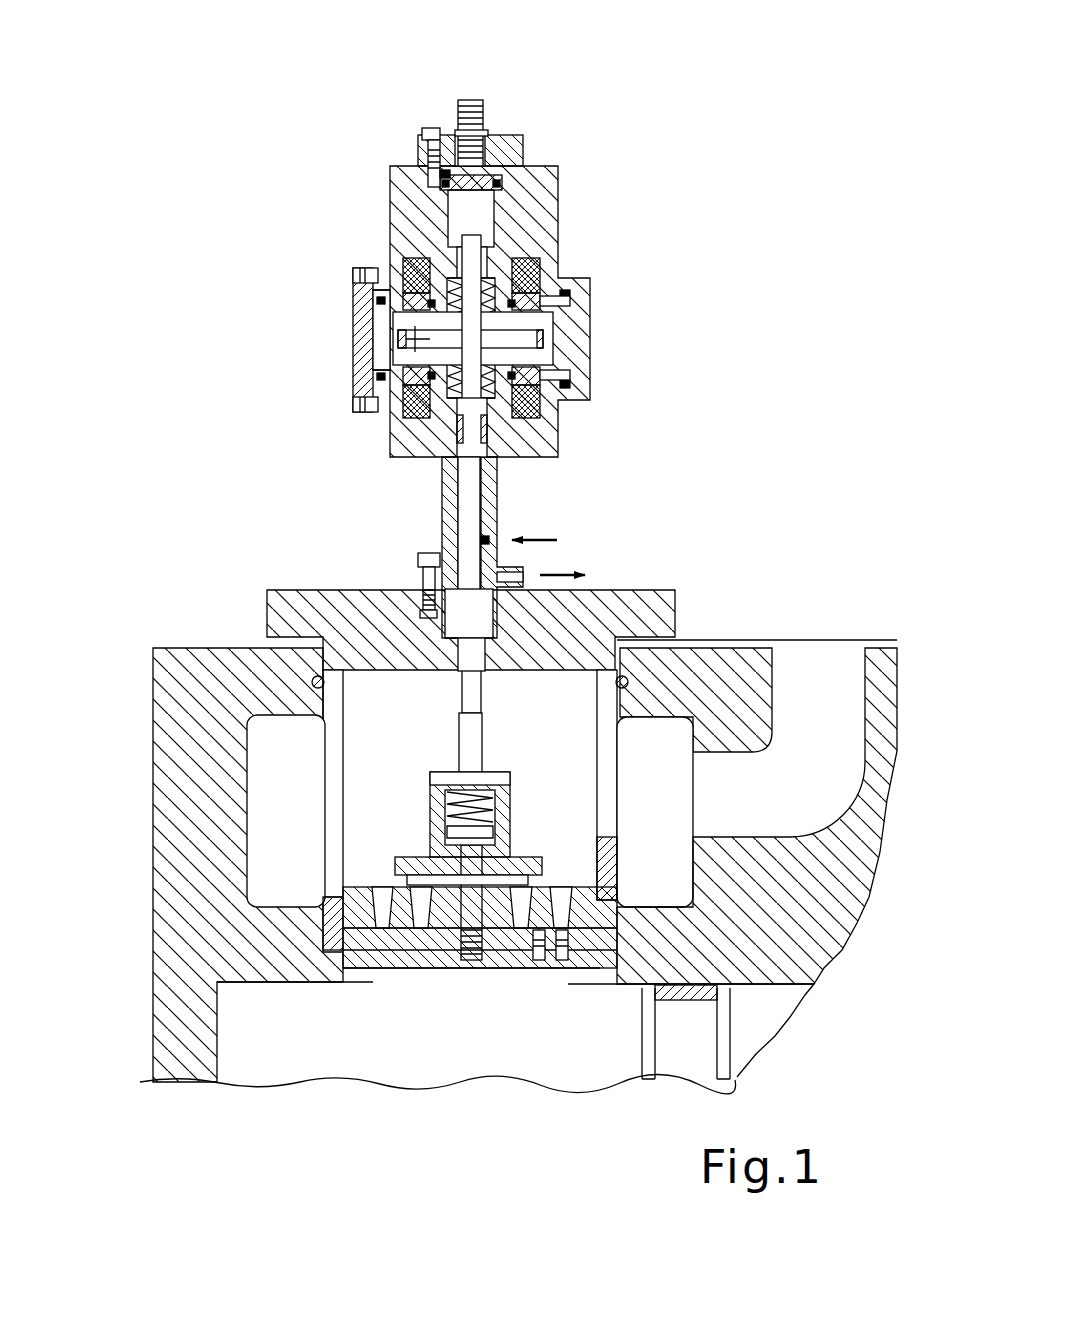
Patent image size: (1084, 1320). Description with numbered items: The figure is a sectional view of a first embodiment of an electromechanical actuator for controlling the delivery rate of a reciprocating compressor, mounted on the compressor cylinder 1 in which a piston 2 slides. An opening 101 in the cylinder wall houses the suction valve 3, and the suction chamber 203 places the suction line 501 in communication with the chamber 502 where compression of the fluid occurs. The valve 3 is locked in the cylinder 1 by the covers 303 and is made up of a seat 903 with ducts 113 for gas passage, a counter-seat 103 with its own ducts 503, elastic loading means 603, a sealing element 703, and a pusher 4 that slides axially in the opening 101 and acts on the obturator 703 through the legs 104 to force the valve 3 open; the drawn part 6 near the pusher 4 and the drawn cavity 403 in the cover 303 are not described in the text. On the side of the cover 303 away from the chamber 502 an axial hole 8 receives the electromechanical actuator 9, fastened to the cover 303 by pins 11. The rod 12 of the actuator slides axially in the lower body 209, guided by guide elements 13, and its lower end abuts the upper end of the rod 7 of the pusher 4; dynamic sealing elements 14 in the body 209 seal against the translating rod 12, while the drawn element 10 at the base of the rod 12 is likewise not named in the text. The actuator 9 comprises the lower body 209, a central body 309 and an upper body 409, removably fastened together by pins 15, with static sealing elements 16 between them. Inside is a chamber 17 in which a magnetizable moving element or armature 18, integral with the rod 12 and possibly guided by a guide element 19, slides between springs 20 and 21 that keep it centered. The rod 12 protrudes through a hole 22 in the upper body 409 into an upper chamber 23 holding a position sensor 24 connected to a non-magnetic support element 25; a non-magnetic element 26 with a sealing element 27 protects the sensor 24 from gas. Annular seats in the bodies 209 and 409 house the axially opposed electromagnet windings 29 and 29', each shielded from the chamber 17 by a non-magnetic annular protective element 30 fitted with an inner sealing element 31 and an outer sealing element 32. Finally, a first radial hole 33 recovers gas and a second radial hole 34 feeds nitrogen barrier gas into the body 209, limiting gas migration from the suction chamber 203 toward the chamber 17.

The cylinder 1 is at (154, 997).
The piston 2 is at (695, 1042).
The suction valve 3 is at (378, 876).
The pusher 4 is at (508, 818).
The spring 6 is at (446, 810).
The rod of the pusher 7 is at (468, 728).
The axial hole 8 is at (445, 655).
The electromechanical actuator 9 is at (382, 246).
The seal 10 is at (490, 609).
The pins 11 is at (432, 600).
The rod of the actuator 12 is at (472, 495).
The guide elements 13 is at (517, 425).
The sealing elements 14 is at (452, 457).
The pins 15 is at (372, 292).
The sealing elements 16 is at (378, 302).
The chamber 17 is at (396, 330).
The moving element 18 is at (405, 348).
The guide element 19 is at (544, 355).
The spring 20 is at (452, 425).
The spring 21 is at (408, 277).
The hole 22 is at (492, 247).
The upper chamber 23 is at (548, 200).
The position sensor 24 is at (478, 105).
The non-magnetic support element 25 is at (527, 165).
The element made of non-magnetic material 26 is at (445, 180).
The sealing element 27 is at (452, 178).
The winding 29 is at (554, 365).
The winding 29' is at (631, 257).
The annular protective element 30 is at (560, 318).
The inner sealing element 31 is at (392, 275).
The outer sealing element 32 is at (368, 300).
The first radial hole 33 is at (524, 570).
The second radial hole 34 is at (493, 540).
The opening 101 is at (348, 983).
The counter-seat 103 is at (495, 965).
The legs 104 is at (405, 893).
The ducts 113 is at (598, 860).
The suction chamber 203 is at (370, 750).
The lower body 209 is at (412, 437).
The covers 303 is at (610, 686).
The central body 309 is at (578, 302).
The cavity 403 is at (612, 788).
The upper body 409 is at (482, 212).
The suction line 501 is at (812, 672).
The chamber 502 is at (258, 1052).
The ducts 503 is at (432, 950).
The elastic loading means 603 is at (528, 965).
The sealing element 703 is at (340, 928).
The seat 903 is at (645, 900).